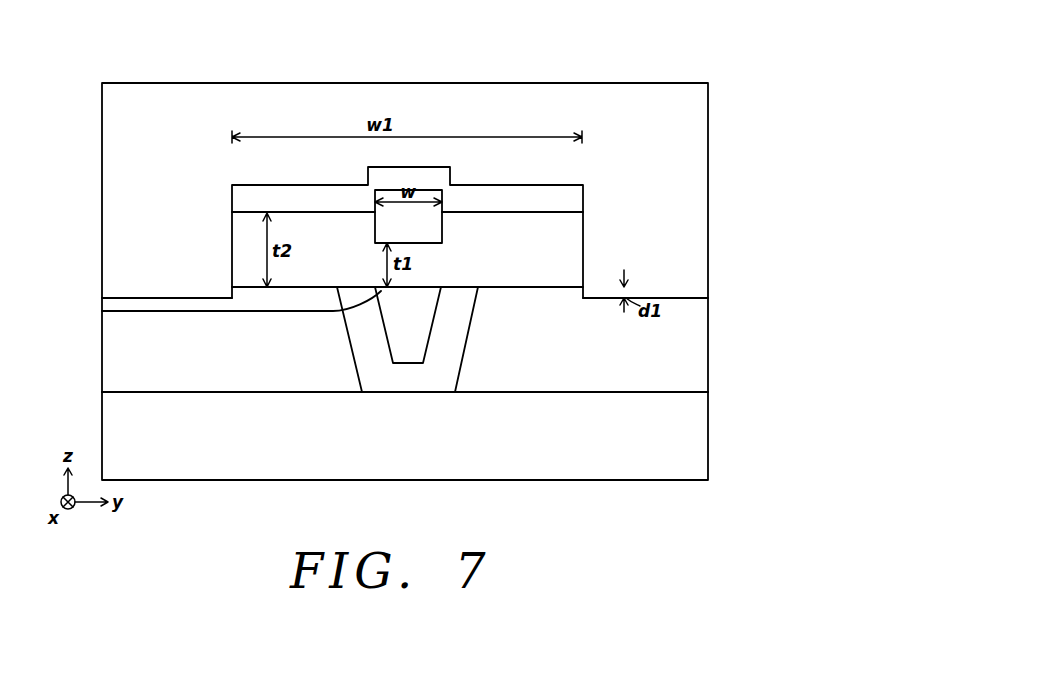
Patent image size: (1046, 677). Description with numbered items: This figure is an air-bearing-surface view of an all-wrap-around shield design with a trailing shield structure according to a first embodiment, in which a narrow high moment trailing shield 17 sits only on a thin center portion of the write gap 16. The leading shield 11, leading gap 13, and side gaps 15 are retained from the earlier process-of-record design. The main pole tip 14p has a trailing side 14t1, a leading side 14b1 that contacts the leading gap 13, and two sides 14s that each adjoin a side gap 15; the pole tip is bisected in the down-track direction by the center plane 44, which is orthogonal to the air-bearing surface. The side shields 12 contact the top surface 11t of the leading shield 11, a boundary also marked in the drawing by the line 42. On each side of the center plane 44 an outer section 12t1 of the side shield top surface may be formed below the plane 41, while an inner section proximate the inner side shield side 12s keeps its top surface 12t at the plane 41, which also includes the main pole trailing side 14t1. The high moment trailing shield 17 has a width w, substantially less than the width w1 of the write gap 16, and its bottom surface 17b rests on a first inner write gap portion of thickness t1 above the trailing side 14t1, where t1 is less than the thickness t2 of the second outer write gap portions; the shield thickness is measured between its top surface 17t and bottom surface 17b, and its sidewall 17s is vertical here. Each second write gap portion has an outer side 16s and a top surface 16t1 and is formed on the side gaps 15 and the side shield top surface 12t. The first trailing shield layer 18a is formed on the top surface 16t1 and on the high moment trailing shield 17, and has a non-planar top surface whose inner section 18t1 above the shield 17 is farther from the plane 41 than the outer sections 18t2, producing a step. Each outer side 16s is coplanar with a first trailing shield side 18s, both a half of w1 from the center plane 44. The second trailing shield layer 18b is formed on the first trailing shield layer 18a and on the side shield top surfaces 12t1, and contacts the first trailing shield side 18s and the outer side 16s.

The leading shield 11 is at (700, 453).
The top surface of leading shield 11t is at (125, 392).
The side shields 12 is at (120, 330).
The side shield top surface 12t is at (560, 287).
The outer section of side shield top surface 12t1 is at (130, 298).
The inner side shield side 12s is at (463, 348).
The leading gap 13 is at (394, 383).
The main pole tip sides 14s is at (387, 352).
The pole tip portion 14p is at (417, 350).
The leading side of main pole tip 14b1 is at (405, 367).
The trailing side of main pole tip 14t1 is at (102, 312).
The side gaps 15 is at (368, 345).
The write gap 16 is at (565, 268).
The outer side of second write gap portion 16s is at (232, 262).
The top surface of second write gap portion 16t1 is at (562, 212).
The high moment trailing shield 17 is at (442, 228).
The top surface of high moment trailing shield 17t is at (388, 190).
The side of high moment trailing shield 17s is at (375, 225).
The bottom surface of high moment trailing shield 17b is at (442, 243).
The first trailing shield layer 18a is at (537, 200).
The second trailing shield layer 18b is at (683, 122).
The first trailing shield side 18s is at (232, 199).
The inner section of first trailing shield top surface 18t1 is at (245, 185).
The outer sections of first trailing shield top surface 18t2 is at (440, 167).
The plane 41- 41 is at (740, 287).
The reference plane 42 is at (102, 392).
The center plane 44- 44 is at (410, 500).